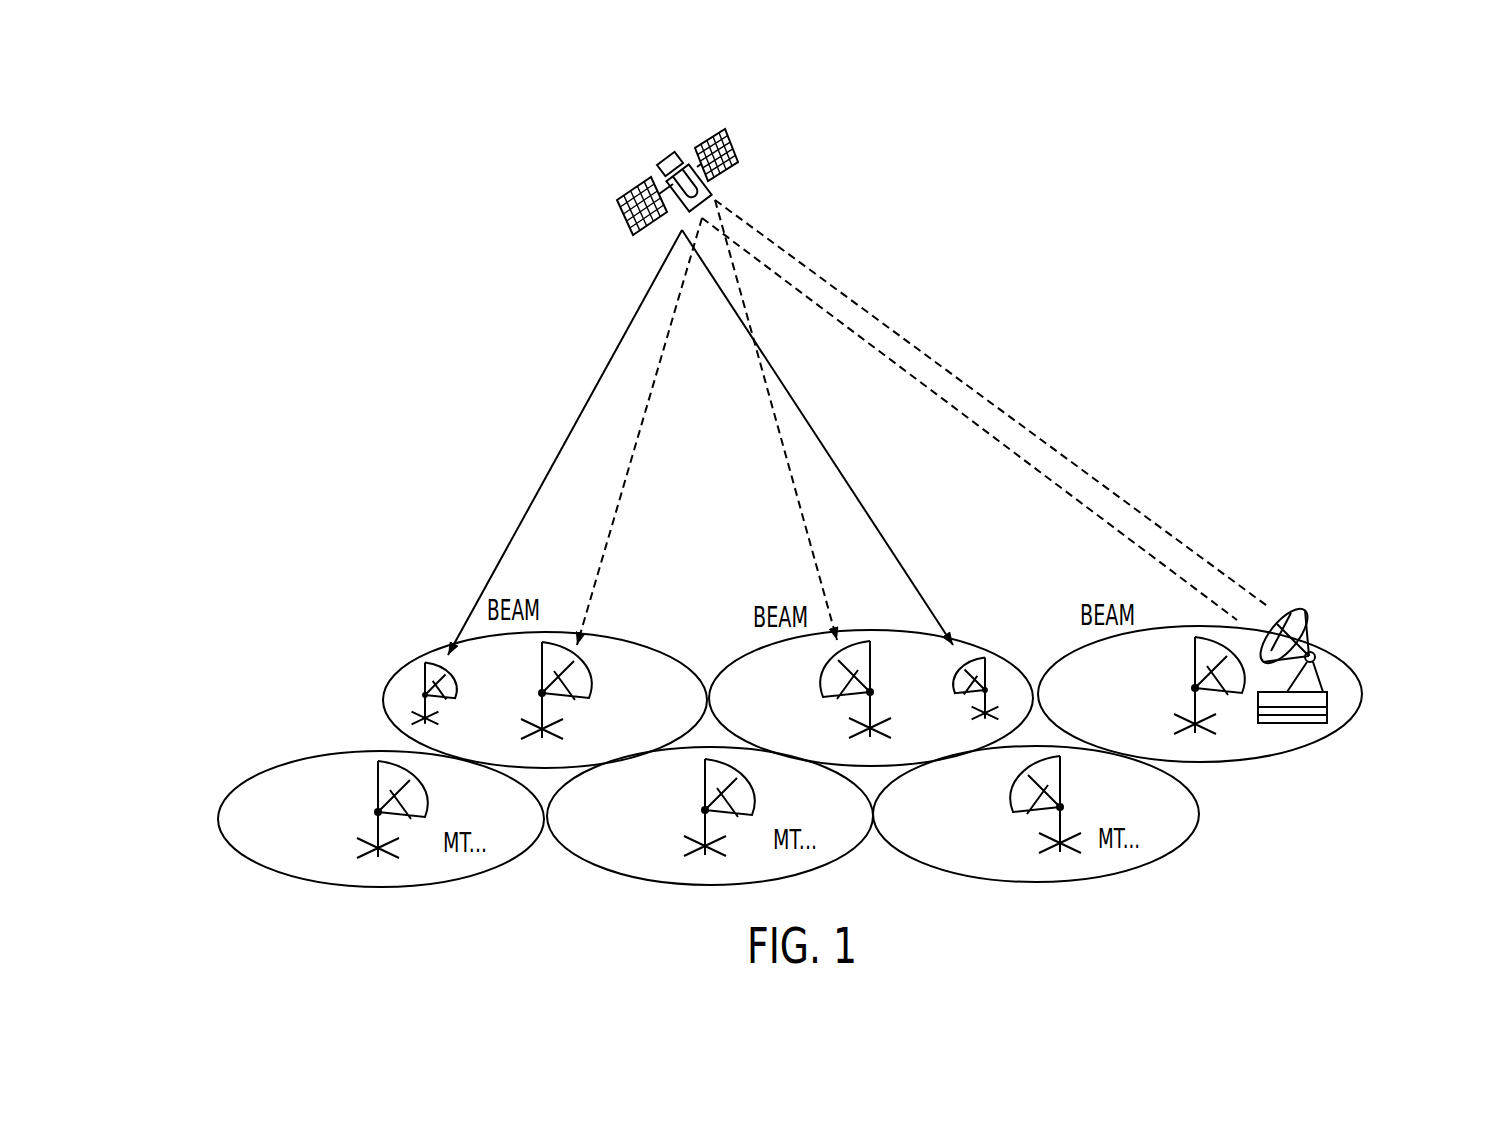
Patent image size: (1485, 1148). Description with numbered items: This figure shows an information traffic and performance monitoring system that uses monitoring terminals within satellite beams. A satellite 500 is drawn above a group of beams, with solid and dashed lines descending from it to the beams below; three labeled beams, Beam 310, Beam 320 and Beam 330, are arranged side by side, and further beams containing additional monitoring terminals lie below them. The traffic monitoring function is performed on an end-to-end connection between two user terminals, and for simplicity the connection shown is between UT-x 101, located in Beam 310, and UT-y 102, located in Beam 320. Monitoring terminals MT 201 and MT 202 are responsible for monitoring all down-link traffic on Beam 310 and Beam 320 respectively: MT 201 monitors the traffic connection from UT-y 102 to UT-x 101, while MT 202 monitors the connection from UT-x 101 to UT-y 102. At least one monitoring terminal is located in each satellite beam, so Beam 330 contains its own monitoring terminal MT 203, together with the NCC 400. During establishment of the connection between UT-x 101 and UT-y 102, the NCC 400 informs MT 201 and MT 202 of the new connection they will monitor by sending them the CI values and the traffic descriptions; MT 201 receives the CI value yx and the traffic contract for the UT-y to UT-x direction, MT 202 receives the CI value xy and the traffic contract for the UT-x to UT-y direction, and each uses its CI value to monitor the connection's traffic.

The satellite 500 is at (743, 150).
The Beam 310 is at (607, 635).
The Beam 320 is at (870, 630).
The beam 330 is at (1142, 630).
The UT-x 101 is at (428, 699).
The UT-y 102 is at (957, 692).
The MT 201 is at (586, 700).
The MT 202 is at (823, 697).
The mobile terminal MT 203 is at (1151, 694).
The NCC 400 is at (1327, 702).